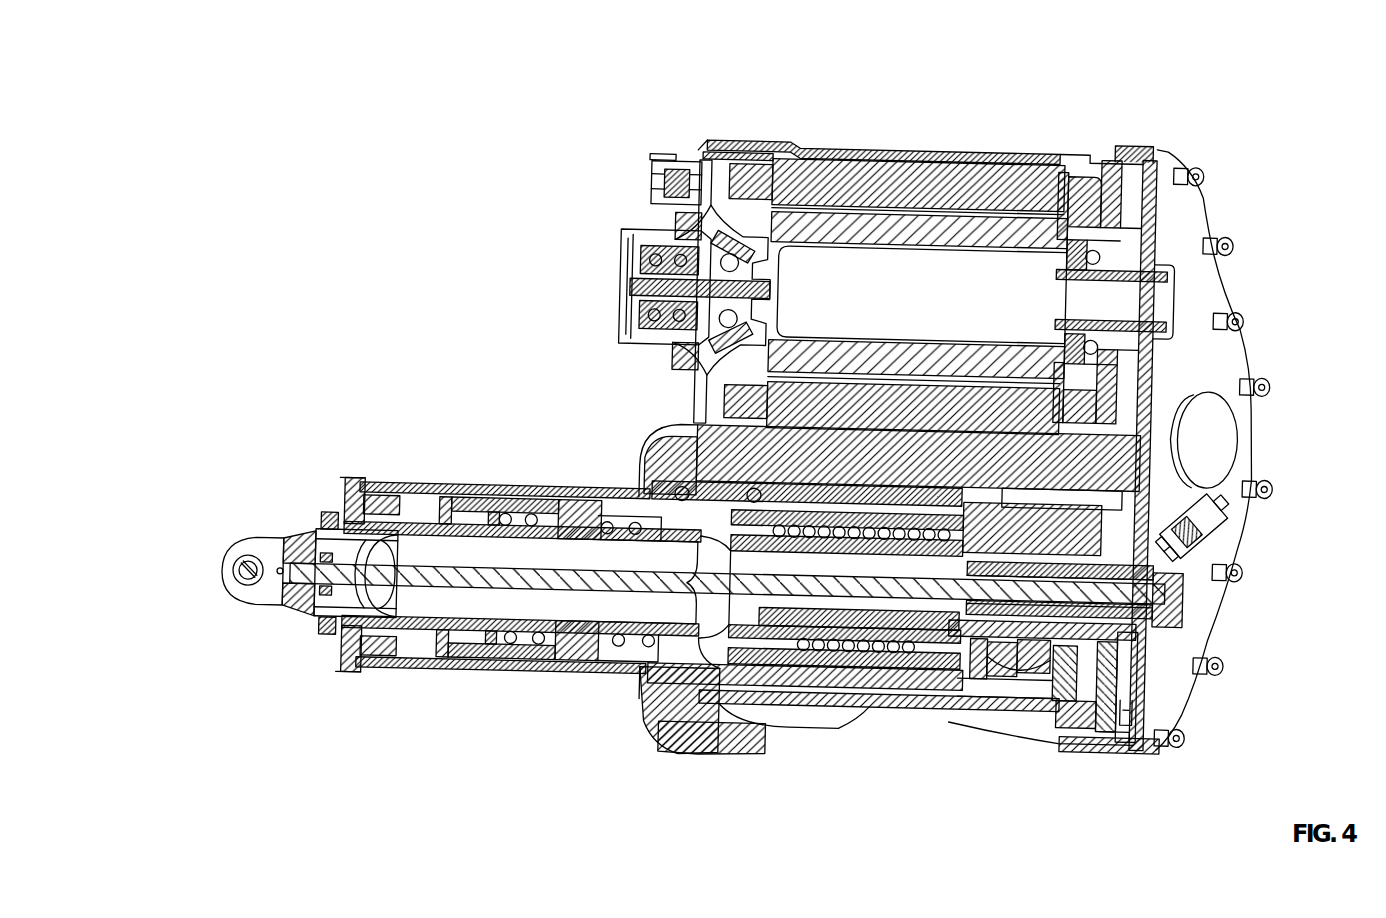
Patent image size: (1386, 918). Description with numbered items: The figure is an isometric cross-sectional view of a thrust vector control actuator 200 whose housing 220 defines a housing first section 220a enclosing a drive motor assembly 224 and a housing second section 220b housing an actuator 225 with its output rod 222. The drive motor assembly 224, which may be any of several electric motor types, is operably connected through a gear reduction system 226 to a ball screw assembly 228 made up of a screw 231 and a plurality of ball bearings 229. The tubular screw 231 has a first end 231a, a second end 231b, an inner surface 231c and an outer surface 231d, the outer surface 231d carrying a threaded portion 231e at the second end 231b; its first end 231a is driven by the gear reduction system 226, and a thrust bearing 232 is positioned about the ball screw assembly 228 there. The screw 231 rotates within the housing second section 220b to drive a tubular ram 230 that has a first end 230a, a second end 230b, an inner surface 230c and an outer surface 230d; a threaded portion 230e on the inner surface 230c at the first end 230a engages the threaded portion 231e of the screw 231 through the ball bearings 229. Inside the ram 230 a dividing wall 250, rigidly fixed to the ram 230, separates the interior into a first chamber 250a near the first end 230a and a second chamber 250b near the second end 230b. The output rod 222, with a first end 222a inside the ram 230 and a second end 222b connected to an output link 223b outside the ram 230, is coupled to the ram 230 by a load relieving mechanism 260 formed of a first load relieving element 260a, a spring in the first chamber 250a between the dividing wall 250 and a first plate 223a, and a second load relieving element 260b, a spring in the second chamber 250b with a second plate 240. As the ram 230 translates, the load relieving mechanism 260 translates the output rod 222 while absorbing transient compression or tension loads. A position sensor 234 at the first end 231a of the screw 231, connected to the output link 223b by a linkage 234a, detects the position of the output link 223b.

The thrust vector control actuator 200 is at (1232, 136).
The housing 220 is at (872, 152).
The housing first section 220a is at (445, 140).
The housing second section 220b is at (191, 430).
The output rod 222 is at (345, 642).
The first end 222a is at (660, 455).
The second end 222b is at (313, 622).
The first plate 223a is at (645, 700).
The output link 223b is at (275, 545).
The drive motor assembly 224 is at (588, 298).
The actuator 225 is at (372, 410).
The gear reduction system 226 is at (1140, 425).
The ball screw assembly 228 is at (724, 768).
The ball bearings 229 is at (890, 660).
The ram 230 is at (462, 652).
The first end 230a is at (1012, 660).
The second end 230b is at (425, 655).
The inner surface 230c is at (700, 752).
The outer surface 230d is at (755, 712).
The threaded portion 230e is at (862, 485).
The screw 231 is at (1035, 705).
The first end 231a is at (1160, 630).
The second end 231b is at (831, 576).
The inner surface 231c is at (862, 645).
The outer surface 231d is at (830, 680).
The threaded portion 231e is at (940, 660).
The thrust bearing 232 is at (1090, 722).
The position sensor 234 is at (1180, 600).
The linkage 234a is at (326, 510).
The second plate 240 is at (492, 645).
The dividing wall 250 is at (575, 518).
The first chamber 250a is at (968, 92).
The second chamber 250b is at (538, 478).
The load relieving mechanism 260 is at (547, 648).
The first load relieving element 260a is at (622, 648).
The second load relieving element 260b is at (517, 648).